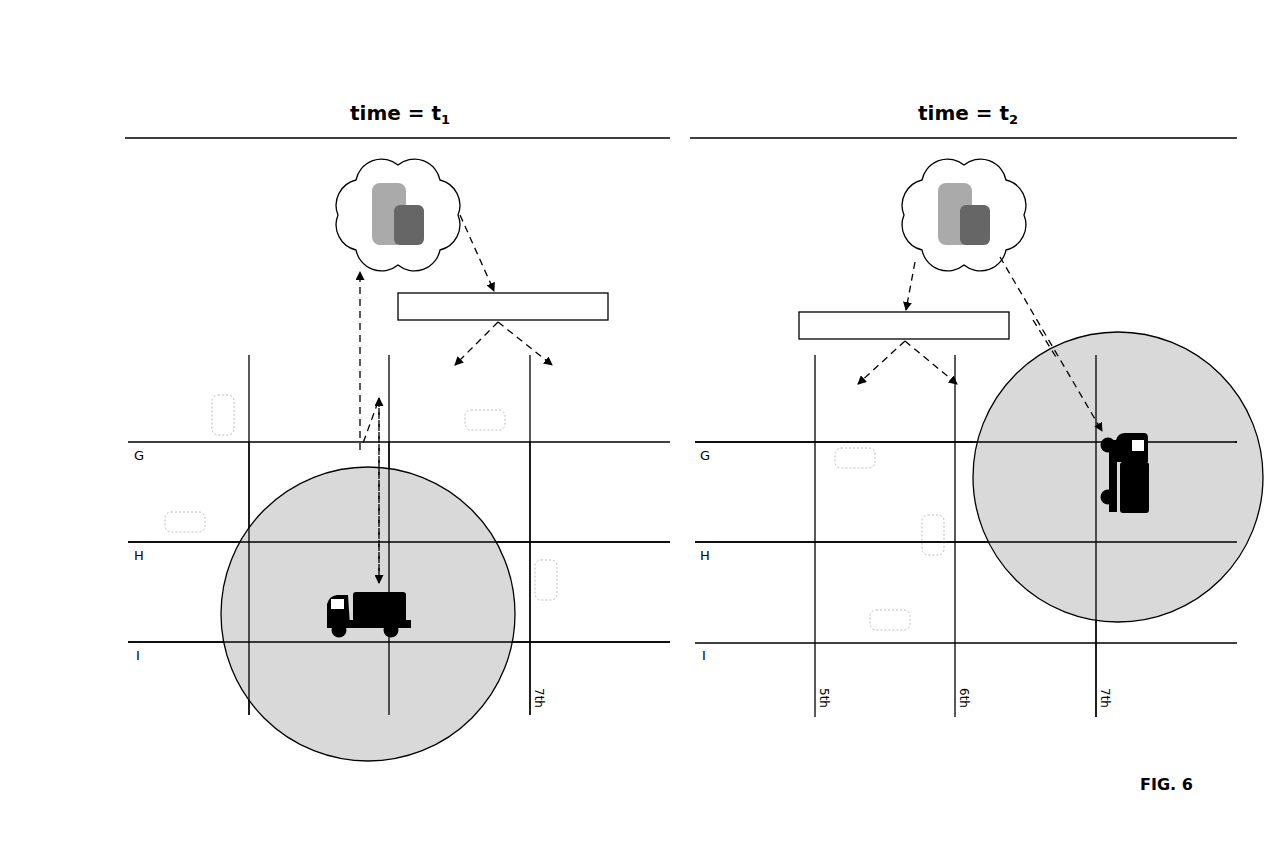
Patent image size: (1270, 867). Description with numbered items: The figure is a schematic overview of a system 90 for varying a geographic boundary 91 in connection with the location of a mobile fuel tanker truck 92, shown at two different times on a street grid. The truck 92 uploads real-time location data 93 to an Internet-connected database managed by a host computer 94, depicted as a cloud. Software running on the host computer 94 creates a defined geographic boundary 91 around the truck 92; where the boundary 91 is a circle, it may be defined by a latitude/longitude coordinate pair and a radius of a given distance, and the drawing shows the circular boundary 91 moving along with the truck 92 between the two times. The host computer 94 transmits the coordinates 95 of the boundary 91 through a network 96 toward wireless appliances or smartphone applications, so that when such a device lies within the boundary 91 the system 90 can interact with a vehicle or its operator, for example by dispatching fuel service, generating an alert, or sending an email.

The system 90 is at (182, 97).
The geographic boundary 91 is at (372, 762).
The mobile fuel tanker truck 92 is at (420, 610).
The real-time location data 93 is at (354, 331).
The host computer 94 is at (330, 218).
The boundary coordinates 95 is at (488, 258).
The network 96 is at (798, 324).